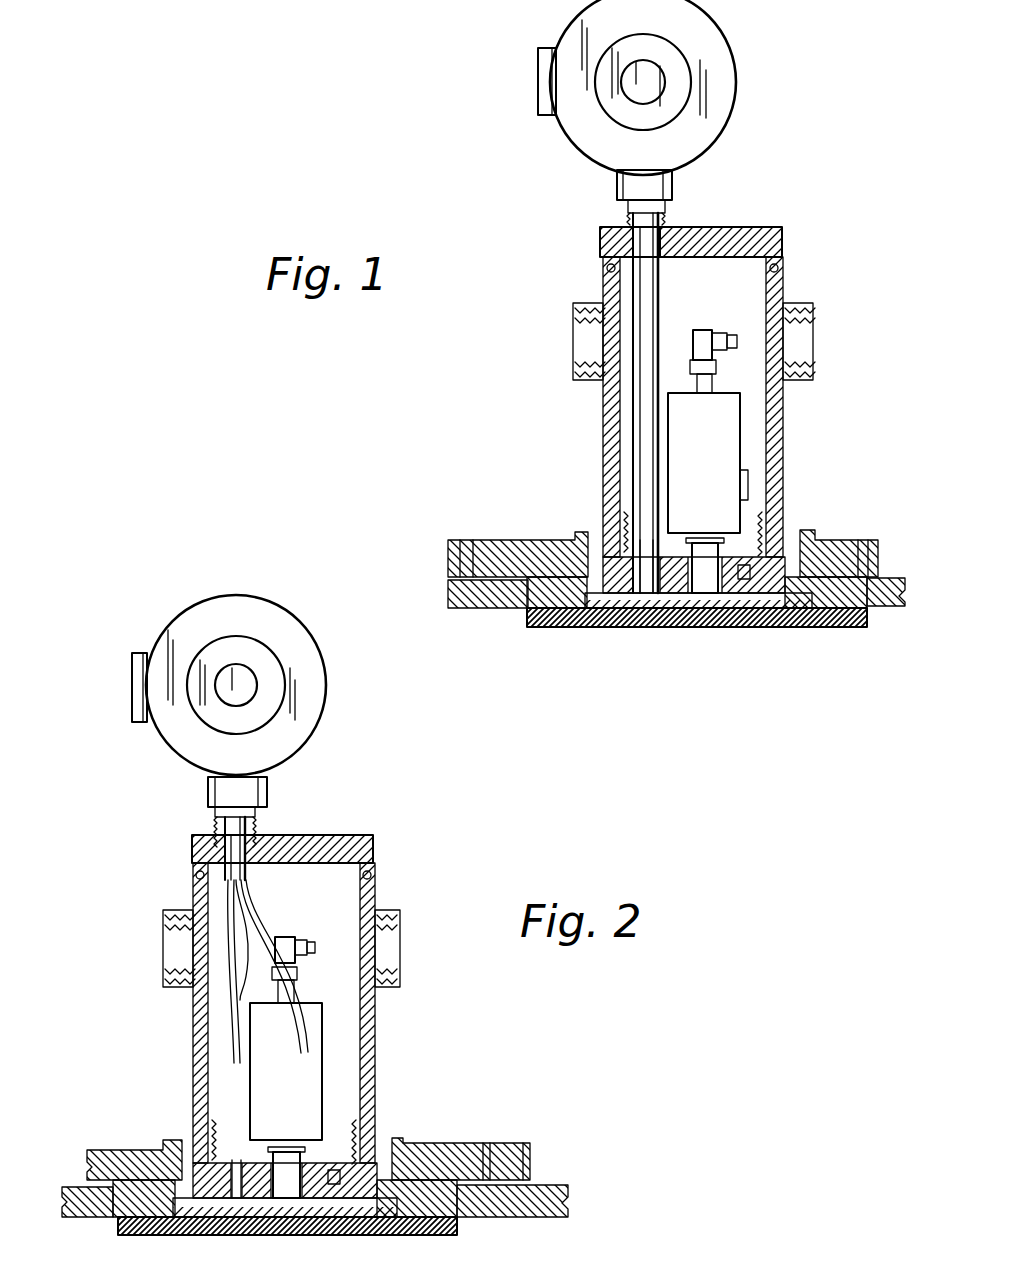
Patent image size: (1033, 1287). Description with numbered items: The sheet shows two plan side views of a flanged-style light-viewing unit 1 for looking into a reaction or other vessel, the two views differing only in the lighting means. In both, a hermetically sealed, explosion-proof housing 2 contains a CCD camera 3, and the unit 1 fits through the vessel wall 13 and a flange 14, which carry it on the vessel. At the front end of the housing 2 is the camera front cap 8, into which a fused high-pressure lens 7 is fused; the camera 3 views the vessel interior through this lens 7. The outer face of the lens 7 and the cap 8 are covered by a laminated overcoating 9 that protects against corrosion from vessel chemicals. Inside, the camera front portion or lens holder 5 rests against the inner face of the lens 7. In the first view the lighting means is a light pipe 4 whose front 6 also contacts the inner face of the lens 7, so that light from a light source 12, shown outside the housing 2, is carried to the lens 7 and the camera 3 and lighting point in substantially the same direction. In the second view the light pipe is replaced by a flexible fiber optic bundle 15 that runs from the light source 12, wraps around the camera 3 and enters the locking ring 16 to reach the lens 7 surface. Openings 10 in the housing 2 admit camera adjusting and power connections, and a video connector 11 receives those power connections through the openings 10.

In FIG. 1, the light-viewing unit 1 is at (753, 157).
In FIG. 2, the light-viewing unit 1 is at (334, 750).
In FIG. 1, the housing 2 is at (782, 426).
In FIG. 2, the housing 2 is at (377, 1030).
In FIG. 1, the camera 3 is at (712, 405).
In FIG. 2, the camera 3 is at (300, 1017).
In FIG. 1, the light pipe 4 is at (631, 418).
In FIG. 1, the camera front portion 5 is at (700, 538).
In FIG. 2, the camera front portion 5 is at (280, 1152).
In FIG. 1, the light pipe front 6 is at (660, 540).
In FIG. 1, the fused lens 7 is at (770, 618).
In FIG. 2, the fused lens 7 is at (301, 1212).
In FIG. 1, the camera front cap 8 is at (533, 596).
In FIG. 2, the camera front cap 8 is at (110, 1209).
In FIG. 1, the laminated overcoating 9 is at (618, 617).
In FIG. 2, the laminated overcoating 9 is at (144, 1227).
In FIG. 1, the openings 10 is at (575, 323).
In FIG. 2, the openings 10 is at (178, 945).
In FIG. 1, the video connector 11 is at (730, 304).
In FIG. 2, the video connector 11 is at (320, 913).
In FIG. 1, the light source 12 is at (720, 46).
In FIG. 2, the light source 12 is at (185, 607).
In FIG. 1, the vessel wall 13 is at (482, 605).
In FIG. 2, the vessel wall 13 is at (523, 1217).
In FIG. 1, the flange 14 is at (533, 541).
In FIG. 2, the flange 14 is at (126, 1153).
In FIG. 2, the fiber optic bundle 15 is at (250, 910).
In FIG. 2, the locking ring 16 is at (250, 1193).